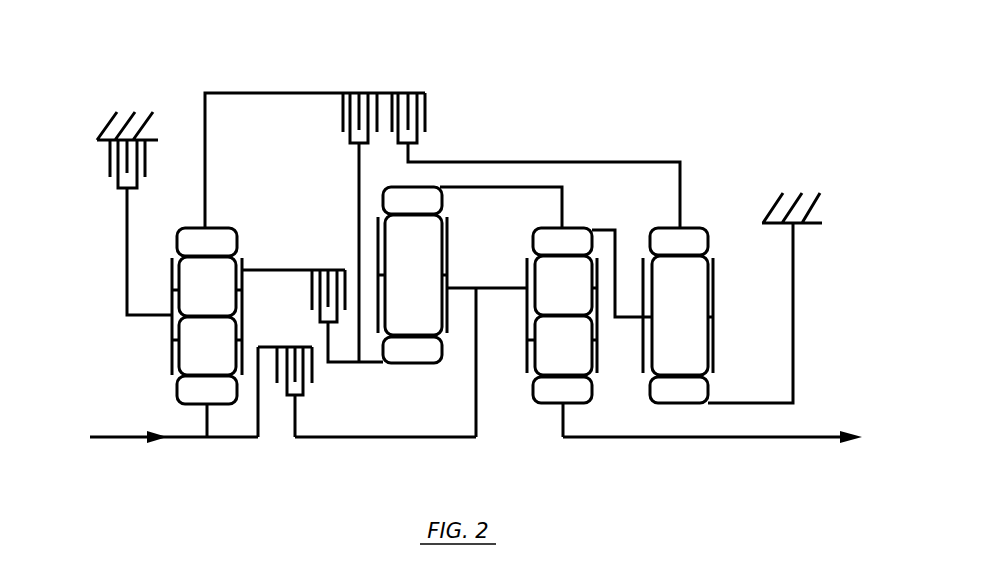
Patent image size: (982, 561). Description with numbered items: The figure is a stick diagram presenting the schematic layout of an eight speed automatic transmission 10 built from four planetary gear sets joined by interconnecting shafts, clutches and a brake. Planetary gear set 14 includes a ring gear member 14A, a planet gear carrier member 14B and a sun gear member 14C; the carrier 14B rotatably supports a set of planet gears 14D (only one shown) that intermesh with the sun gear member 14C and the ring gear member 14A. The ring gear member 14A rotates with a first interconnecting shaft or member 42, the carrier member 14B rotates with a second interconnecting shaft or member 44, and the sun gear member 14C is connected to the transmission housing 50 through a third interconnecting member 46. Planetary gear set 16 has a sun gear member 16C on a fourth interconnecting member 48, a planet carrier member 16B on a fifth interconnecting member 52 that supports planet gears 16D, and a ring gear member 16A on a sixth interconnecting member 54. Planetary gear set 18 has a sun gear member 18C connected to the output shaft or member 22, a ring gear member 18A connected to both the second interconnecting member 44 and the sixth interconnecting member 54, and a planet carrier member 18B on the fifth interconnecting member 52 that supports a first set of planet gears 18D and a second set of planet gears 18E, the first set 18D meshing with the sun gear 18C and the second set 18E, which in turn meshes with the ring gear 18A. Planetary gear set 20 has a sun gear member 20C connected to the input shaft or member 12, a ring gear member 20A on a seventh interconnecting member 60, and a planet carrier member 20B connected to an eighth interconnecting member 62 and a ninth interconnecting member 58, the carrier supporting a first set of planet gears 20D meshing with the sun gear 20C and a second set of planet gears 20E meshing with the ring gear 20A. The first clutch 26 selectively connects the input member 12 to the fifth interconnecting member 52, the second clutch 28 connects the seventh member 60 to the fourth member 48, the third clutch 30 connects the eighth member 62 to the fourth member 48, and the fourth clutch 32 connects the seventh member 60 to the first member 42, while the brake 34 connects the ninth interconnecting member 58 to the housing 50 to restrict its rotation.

The eight speed transmission 10 is at (632, 71).
The input shaft or member 12 is at (135, 440).
The planetary gear set 14 is at (701, 315).
The ring gear member 14A is at (661, 253).
The planet gear carrier member 14B is at (715, 288).
The sun gear member 14C is at (661, 402).
The planet gears 14D is at (662, 322).
The planetary gear set 16 is at (433, 313).
The ring gear member 16A is at (395, 212).
The planet carrier member 16B is at (448, 237).
The sun gear member 16C is at (395, 362).
The planet gears 16D is at (396, 282).
The planetary gear set 18 is at (541, 356).
The ring gear member 18A is at (545, 253).
The planet carrier member 18B is at (528, 273).
The sun gear member 18C is at (545, 402).
The first set of planet gears 18D is at (546, 353).
The second set of planet gears 18E is at (546, 293).
The planetary gear set 20 is at (188, 359).
The ring gear member 20A is at (189, 254).
The planet carrier member 20B is at (172, 275).
The sun gear member 20C is at (189, 402).
The first set of planet gears 20D is at (226, 353).
The second set of planet gears 20E is at (226, 294).
The output shaft or member 22 is at (785, 440).
The first clutch 26 is at (312, 371).
The second clutch 28 is at (343, 116).
The third clutch 30 is at (312, 295).
The fourth clutch 32 is at (425, 116).
The brake 34 is at (110, 162).
The first interconnecting shaft or member 42 is at (598, 162).
The second interconnecting shaft or member 44 is at (598, 230).
The third interconnecting shaft or member 46 is at (793, 305).
The fourth interconnecting shaft or member 48 is at (359, 197).
The transmission housing 50 is at (97, 140).
The fifth interconnecting shaft or member 52 is at (500, 290).
The sixth interconnecting shaft or member 54 is at (513, 187).
The ninth interconnecting shaft or member 58 is at (127, 280).
The seventh interconnecting shaft or member 60 is at (258, 92).
The eighth interconnecting shaft or member 62 is at (270, 270).